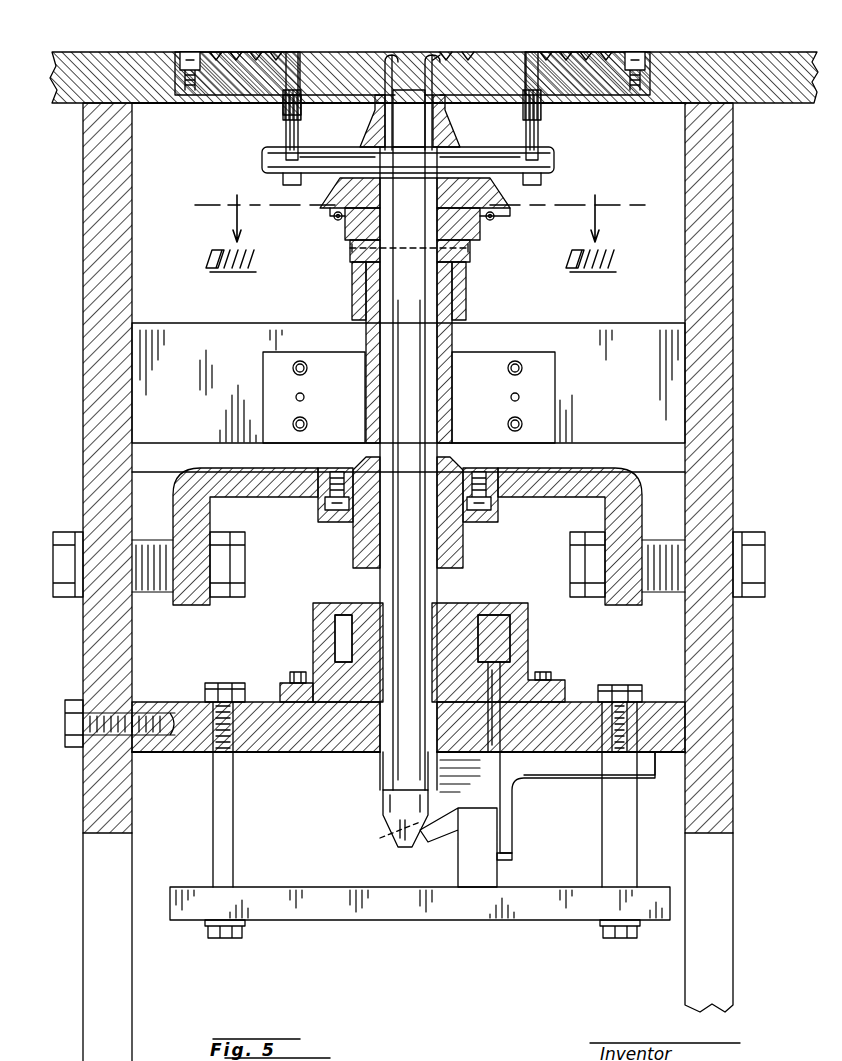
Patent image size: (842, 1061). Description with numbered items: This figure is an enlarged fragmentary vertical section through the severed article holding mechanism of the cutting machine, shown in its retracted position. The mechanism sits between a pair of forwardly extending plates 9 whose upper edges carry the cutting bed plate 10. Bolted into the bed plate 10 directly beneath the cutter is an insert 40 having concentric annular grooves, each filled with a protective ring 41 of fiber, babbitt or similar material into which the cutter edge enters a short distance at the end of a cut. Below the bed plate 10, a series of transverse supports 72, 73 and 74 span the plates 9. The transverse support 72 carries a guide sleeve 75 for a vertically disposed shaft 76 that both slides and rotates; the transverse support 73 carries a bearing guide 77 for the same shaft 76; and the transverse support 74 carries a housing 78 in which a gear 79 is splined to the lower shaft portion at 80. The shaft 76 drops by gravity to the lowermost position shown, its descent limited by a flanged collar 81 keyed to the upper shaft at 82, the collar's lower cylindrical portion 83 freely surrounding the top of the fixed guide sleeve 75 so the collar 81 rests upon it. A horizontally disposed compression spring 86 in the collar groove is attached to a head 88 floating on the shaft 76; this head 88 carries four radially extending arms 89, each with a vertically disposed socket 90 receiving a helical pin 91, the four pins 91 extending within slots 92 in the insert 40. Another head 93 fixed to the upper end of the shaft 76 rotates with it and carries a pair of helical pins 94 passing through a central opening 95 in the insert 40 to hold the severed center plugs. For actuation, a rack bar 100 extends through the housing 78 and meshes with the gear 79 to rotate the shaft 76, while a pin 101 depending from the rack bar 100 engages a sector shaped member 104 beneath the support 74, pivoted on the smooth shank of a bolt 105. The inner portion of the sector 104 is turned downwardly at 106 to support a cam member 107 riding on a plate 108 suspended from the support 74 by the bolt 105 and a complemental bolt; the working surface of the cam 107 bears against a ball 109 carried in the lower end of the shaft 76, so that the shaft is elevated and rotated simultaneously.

The forwardly extending plates 9 is at (83, 233).
The cutting bed plate 10 is at (118, 60).
The insert 40 is at (320, 60).
The ring 41 is at (205, 65).
The transverse support 72 is at (195, 326).
The transverse support 73 is at (190, 482).
The transverse support 74 is at (190, 705).
The guide sleeve 75 is at (452, 340).
The shaft 76 is at (425, 382).
The bearing guide 77 is at (465, 540).
The housing 78 is at (528, 645).
The gear 79 is at (333, 665).
The spline 80 is at (455, 615).
The flanged collar 81 is at (352, 262).
The key 82 is at (352, 250).
The lower cylindrical portion 83 is at (468, 296).
The compression spring 86 is at (498, 226).
The head 88 is at (500, 195).
The arms 89 is at (262, 160).
The socket 90 is at (283, 128).
The helical pin 91 is at (292, 55).
The slots 92 is at (536, 56).
The head 93 is at (372, 123).
The helical pins 94 is at (400, 60).
The central opening 95 is at (440, 58).
The rack bar 100 is at (505, 610).
The pin 101 is at (500, 686).
The sector shaped member 104 is at (562, 780).
The bolt 105 is at (622, 688).
The downwardly turned portion 106 is at (512, 848).
The cam member 107 is at (470, 892).
The plate 108 is at (395, 900).
The ball 109 is at (380, 852).